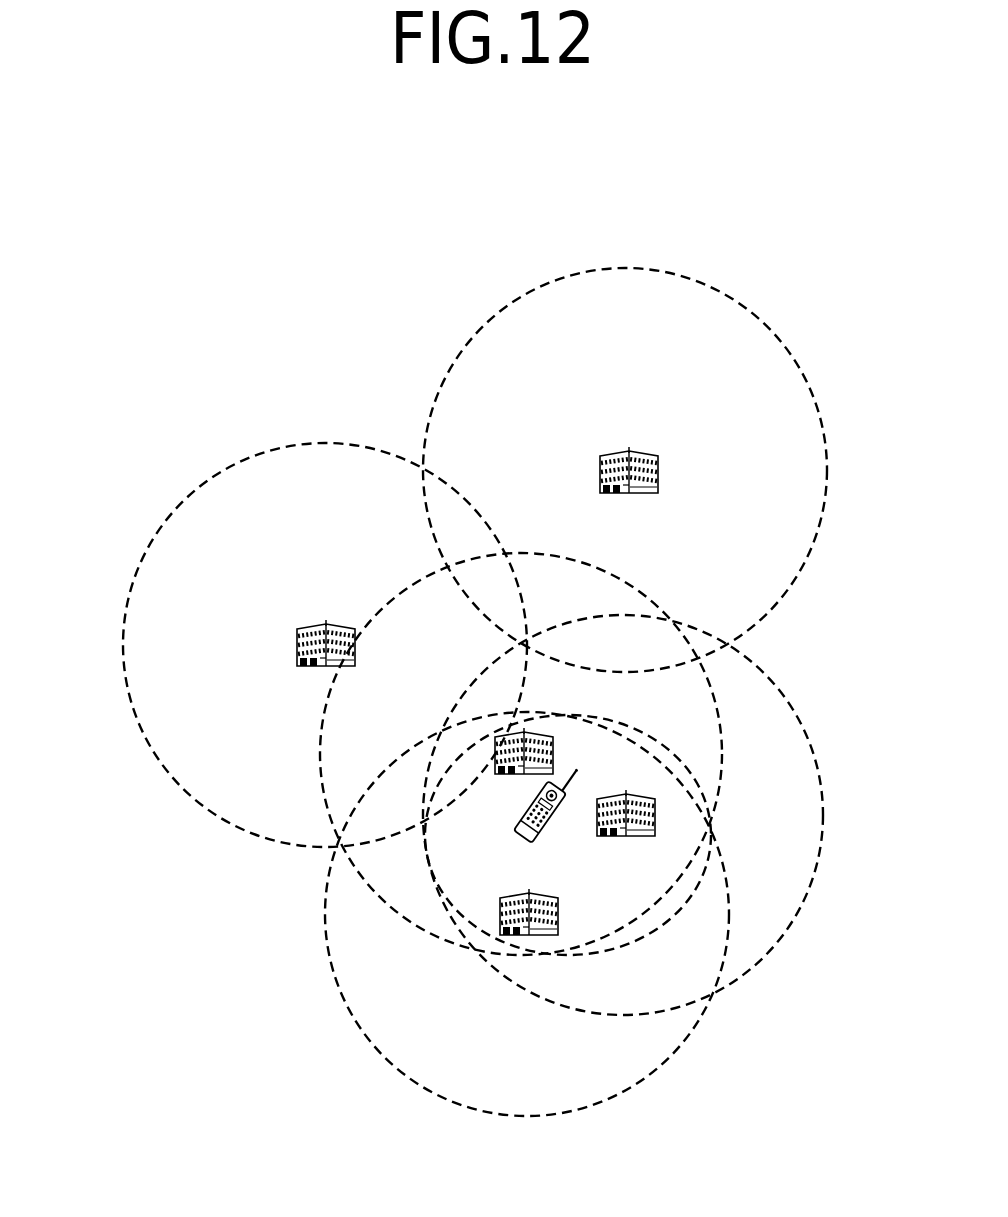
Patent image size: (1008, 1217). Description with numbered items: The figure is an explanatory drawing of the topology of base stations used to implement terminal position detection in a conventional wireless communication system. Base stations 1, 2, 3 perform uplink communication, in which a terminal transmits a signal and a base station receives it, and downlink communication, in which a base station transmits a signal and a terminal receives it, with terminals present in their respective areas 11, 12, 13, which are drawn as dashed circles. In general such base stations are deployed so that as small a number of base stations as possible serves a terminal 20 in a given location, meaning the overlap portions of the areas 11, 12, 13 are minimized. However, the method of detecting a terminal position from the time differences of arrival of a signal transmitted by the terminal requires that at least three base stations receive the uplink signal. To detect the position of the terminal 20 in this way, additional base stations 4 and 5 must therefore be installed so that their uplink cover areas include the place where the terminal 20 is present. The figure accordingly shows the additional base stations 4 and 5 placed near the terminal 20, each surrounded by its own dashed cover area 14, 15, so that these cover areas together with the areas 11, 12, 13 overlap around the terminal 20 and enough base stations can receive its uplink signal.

The base station 1 is at (655, 810).
The base station 2 is at (657, 466).
The base station 3 is at (297, 638).
The additional base station 4 is at (500, 907).
The additional base station 5 is at (552, 750).
The area 11 is at (812, 740).
The area 12 is at (813, 392).
The area 13 is at (123, 620).
The cell area of base station 4 14 is at (395, 1067).
The cell area of base station 5 15 is at (415, 583).
The terminal 20 is at (532, 838).